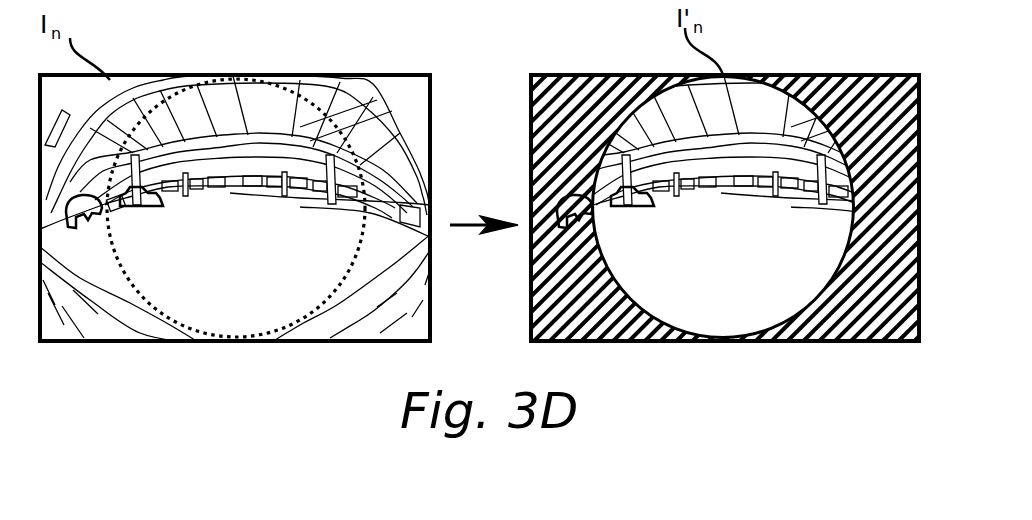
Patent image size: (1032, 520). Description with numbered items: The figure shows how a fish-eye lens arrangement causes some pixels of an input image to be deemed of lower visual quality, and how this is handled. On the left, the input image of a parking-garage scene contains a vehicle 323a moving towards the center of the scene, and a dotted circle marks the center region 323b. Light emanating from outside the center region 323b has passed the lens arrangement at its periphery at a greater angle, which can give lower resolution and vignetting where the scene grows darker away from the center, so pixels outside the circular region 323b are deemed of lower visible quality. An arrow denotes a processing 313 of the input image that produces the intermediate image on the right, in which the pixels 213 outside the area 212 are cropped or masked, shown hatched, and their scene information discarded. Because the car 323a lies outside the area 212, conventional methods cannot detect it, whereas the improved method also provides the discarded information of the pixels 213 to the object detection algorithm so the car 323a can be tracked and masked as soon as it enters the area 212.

The area 212 is at (737, 87).
The pixels 213 is at (867, 328).
The processing 313 is at (460, 228).
The vehicle 323a is at (88, 212).
The center region 323b is at (300, 95).